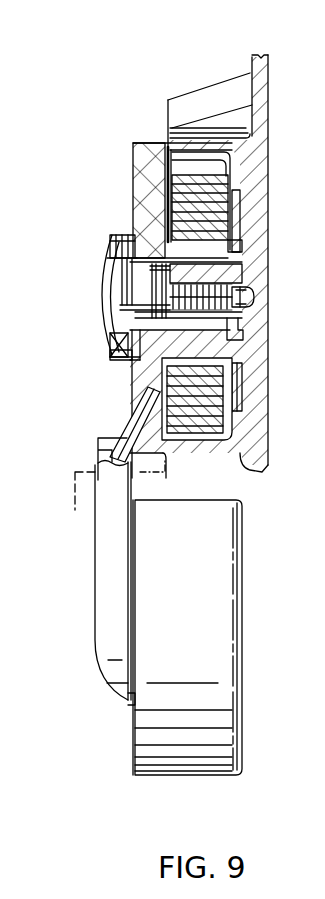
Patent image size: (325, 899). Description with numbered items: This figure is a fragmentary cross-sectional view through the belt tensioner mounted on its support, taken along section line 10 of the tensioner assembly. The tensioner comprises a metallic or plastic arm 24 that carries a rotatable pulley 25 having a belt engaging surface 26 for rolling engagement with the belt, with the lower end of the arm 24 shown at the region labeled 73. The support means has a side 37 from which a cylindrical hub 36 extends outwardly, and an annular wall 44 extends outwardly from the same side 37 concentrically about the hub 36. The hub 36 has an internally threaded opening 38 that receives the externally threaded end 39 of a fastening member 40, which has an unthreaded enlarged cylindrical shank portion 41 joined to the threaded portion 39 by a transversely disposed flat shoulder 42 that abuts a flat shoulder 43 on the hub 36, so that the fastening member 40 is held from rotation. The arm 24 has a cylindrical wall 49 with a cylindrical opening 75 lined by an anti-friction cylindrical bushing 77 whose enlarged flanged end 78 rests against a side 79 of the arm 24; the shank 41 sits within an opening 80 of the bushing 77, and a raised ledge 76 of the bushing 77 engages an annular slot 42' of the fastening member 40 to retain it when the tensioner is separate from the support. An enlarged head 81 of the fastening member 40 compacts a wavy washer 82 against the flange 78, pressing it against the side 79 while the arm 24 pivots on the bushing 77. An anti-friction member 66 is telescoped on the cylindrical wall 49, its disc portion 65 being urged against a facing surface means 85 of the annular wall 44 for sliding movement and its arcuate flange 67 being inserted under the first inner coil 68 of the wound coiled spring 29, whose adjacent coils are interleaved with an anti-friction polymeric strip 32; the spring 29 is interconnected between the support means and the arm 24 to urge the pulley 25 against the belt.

The section line 10- 10 is at (167, 82).
The arm 24 is at (108, 553).
The pulley 25 is at (233, 610).
The belt engaging surface 26 is at (228, 548).
The wound coiled spring 29 is at (242, 177).
The anti-friction polymeric strip 32 is at (222, 210).
The cylindrical hub 36 is at (135, 225).
The side 37 is at (252, 62).
The internally threaded opening 38 is at (266, 298).
The externally threaded end 39 is at (249, 312).
The fastening member 40 is at (110, 273).
The cylindrical shank portion 41 is at (130, 303).
The flat shoulder 42 is at (115, 363).
The annular slot 42' is at (120, 296).
The flat shoulder 43 is at (113, 258).
The annular wall 44 is at (207, 142).
The cylindrical wall 49 is at (232, 246).
The disc portion 65 is at (133, 412).
The anti-friction member 66 is at (164, 458).
The arcuate flange 67 is at (227, 383).
The first inner coil 68 is at (130, 388).
The tube flange 73 is at (117, 690).
The cylindrical opening 75 is at (243, 327).
The raised ledge 76 is at (112, 245).
The cylindrical bushing 77 is at (135, 193).
The enlarged flanged end 78 is at (112, 360).
The side 79 is at (136, 150).
The opening 80 is at (232, 262).
The enlarged head 81 is at (130, 293).
The wavy washer 82 is at (110, 342).
The facing surface means 85 is at (160, 148).